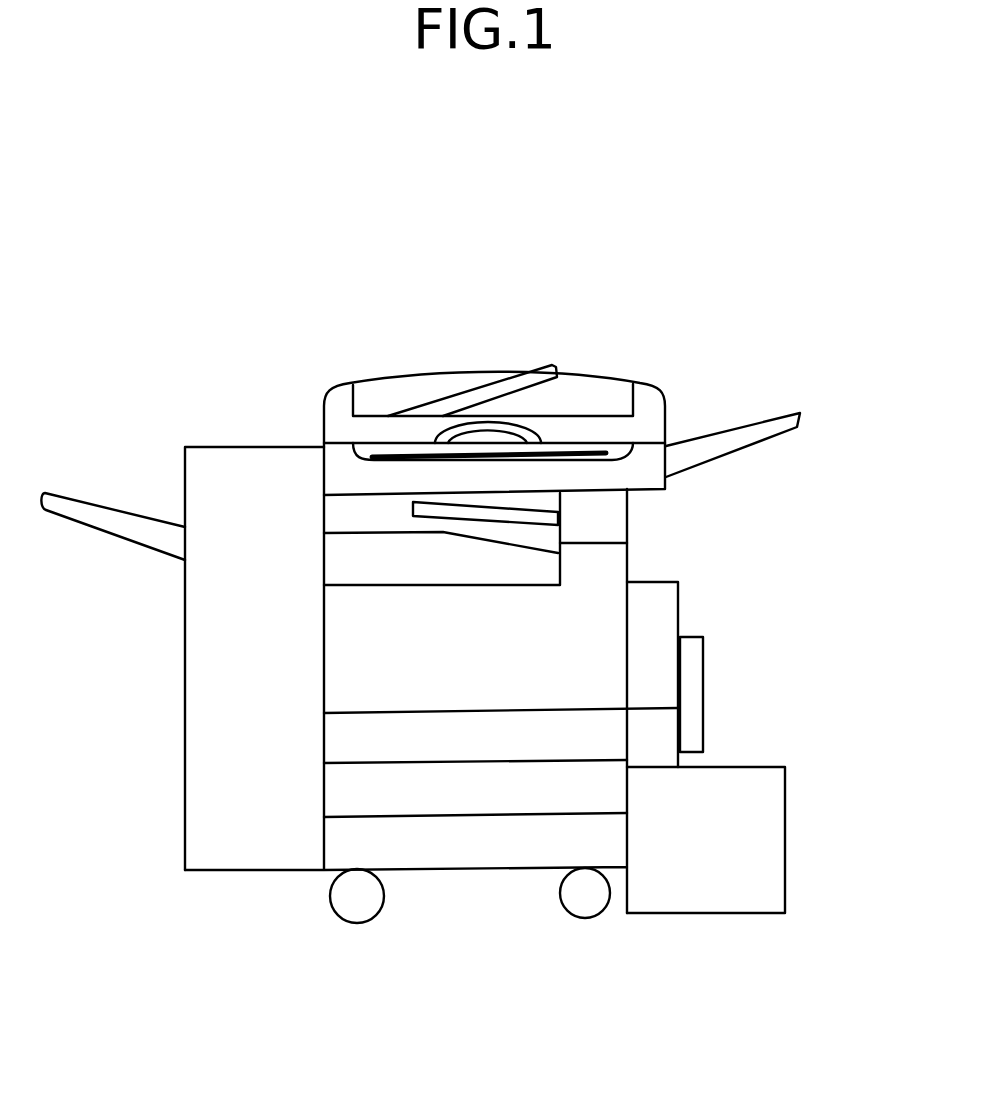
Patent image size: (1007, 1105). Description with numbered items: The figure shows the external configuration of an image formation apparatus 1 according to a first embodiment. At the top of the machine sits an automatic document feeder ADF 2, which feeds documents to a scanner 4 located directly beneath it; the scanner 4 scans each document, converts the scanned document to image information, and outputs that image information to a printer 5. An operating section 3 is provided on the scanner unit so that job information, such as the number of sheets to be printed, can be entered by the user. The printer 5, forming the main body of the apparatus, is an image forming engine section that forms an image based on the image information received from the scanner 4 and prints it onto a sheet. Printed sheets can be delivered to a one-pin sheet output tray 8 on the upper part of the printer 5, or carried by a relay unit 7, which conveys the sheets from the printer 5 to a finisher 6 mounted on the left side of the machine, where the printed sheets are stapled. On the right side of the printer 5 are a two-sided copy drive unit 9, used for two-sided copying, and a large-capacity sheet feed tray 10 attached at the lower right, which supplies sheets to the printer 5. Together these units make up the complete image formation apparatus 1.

The image formation apparatus 1 is at (765, 192).
The automatic document feeder ADF 2 is at (560, 385).
The operating section 3 is at (624, 443).
The scanner 4 is at (353, 470).
The printer 5 is at (603, 568).
The finisher 6 is at (208, 473).
The relay unit 7 is at (362, 565).
The 1-pin sheet output tray 8 is at (612, 518).
The two-sided copy drive unit 9 is at (658, 623).
The large-capacity sheet feed tray 10 is at (762, 863).